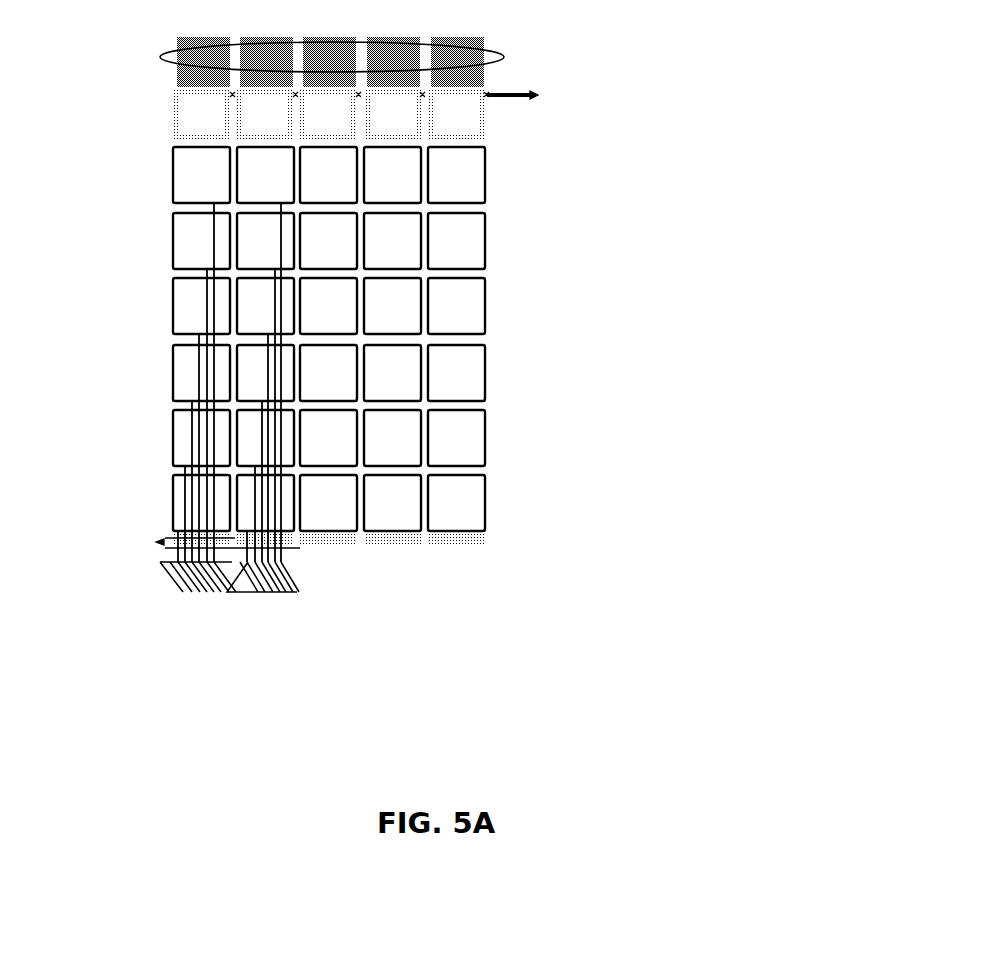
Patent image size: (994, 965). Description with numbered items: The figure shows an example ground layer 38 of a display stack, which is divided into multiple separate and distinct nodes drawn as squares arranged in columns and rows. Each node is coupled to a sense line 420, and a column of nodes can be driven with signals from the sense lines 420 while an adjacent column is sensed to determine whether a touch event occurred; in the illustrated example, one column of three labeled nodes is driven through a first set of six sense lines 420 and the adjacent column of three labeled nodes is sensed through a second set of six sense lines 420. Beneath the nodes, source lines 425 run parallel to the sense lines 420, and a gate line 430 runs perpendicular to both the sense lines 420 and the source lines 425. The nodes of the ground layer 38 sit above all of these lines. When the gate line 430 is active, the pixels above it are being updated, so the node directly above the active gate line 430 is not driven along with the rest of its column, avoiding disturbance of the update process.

The ground layer 38 is at (120, 540).
The gate line 430 is at (500, 55).
The source lines 425 is at (535, 97).
The sense lines 420 is at (308, 545).